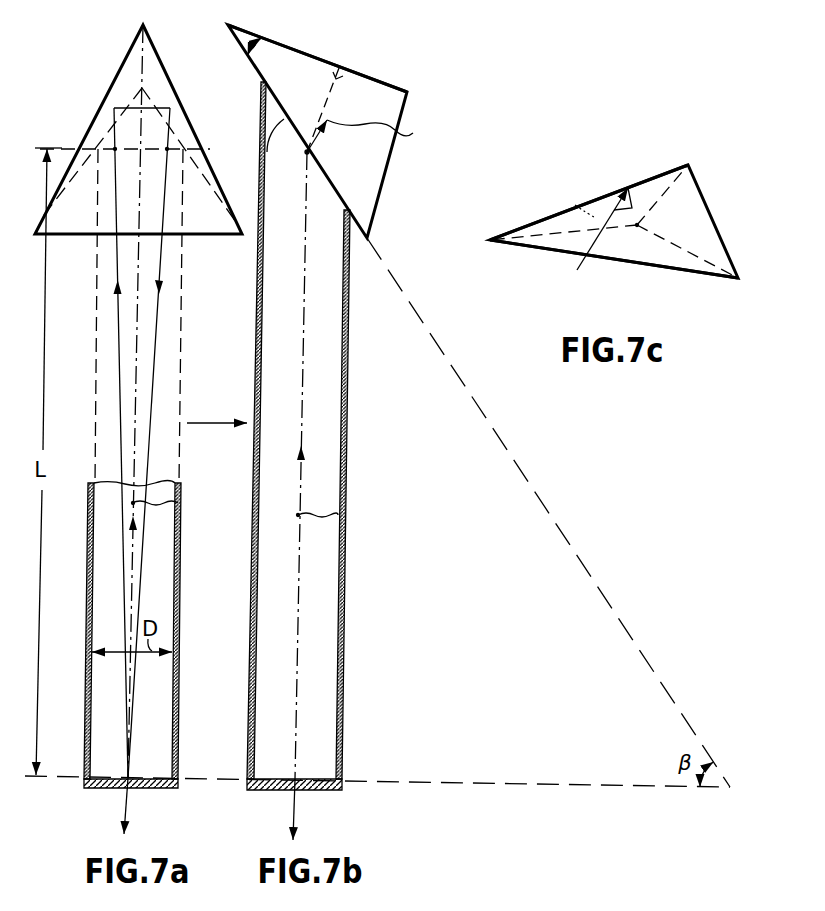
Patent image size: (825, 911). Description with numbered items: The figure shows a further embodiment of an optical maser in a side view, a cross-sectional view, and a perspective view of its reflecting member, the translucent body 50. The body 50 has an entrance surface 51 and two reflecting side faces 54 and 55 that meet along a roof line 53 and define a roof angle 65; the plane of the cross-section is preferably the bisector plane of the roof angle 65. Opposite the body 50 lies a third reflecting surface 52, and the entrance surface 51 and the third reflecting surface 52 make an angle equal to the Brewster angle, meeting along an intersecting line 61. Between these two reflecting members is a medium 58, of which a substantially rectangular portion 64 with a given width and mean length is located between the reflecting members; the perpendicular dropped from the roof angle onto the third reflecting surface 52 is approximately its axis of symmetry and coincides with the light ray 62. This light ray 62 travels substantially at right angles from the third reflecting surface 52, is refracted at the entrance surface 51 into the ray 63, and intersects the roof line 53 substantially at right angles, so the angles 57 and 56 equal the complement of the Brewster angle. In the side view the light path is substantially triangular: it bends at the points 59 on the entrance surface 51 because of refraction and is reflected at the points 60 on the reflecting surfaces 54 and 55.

In FIG. 7A, the translucent body 50 is at (219, 229).
In FIG. 7B, the translucent body 50 is at (372, 175).
In FIG. 7C, the translucent body 50 is at (716, 187).
In FIG. 7B, the entrance surface 51 is at (307, 152).
In FIG. 7C, the entrance surface 51 is at (634, 245).
In FIG. 7A, the third reflecting surface 52 is at (155, 778).
In FIG. 7B, the third reflecting surface 52 is at (323, 773).
In FIG. 7B, the roof line 53 is at (383, 80).
In FIG. 7C, the roof line 53 is at (607, 191).
In FIG. 7C, the reflecting surface 54 is at (575, 205).
In FIG. 7C, the reflecting surface 55 is at (678, 257).
In FIG. 7B, the angle 56 is at (311, 183).
In FIG. 7B, the angle 57 is at (247, 52).
In FIG. 7A, the medium 58 is at (153, 694).
In FIG. 7B, the medium 58 is at (320, 658).
In FIG. 7A, the points on the entrance surface 59 is at (115, 149).
In FIG. 7B, the points on the entrance surface 59 is at (305, 156).
In FIG. 7A, the points on the reflecting surfaces 60 is at (114, 108).
In FIG. 7B, the points on the reflecting surfaces 60 is at (328, 107).
In FIG. 7B, the intersecting line 61 is at (729, 789).
In FIG. 7A, the light ray 62 is at (178, 503).
In FIG. 7B, the light ray 62 is at (338, 515).
In FIG. 7B, the light ray 63 is at (370, 132).
In FIG. 7A, the rectangular portion 64 is at (97, 357).
In FIG. 7C, the roof angle 65 is at (585, 239).